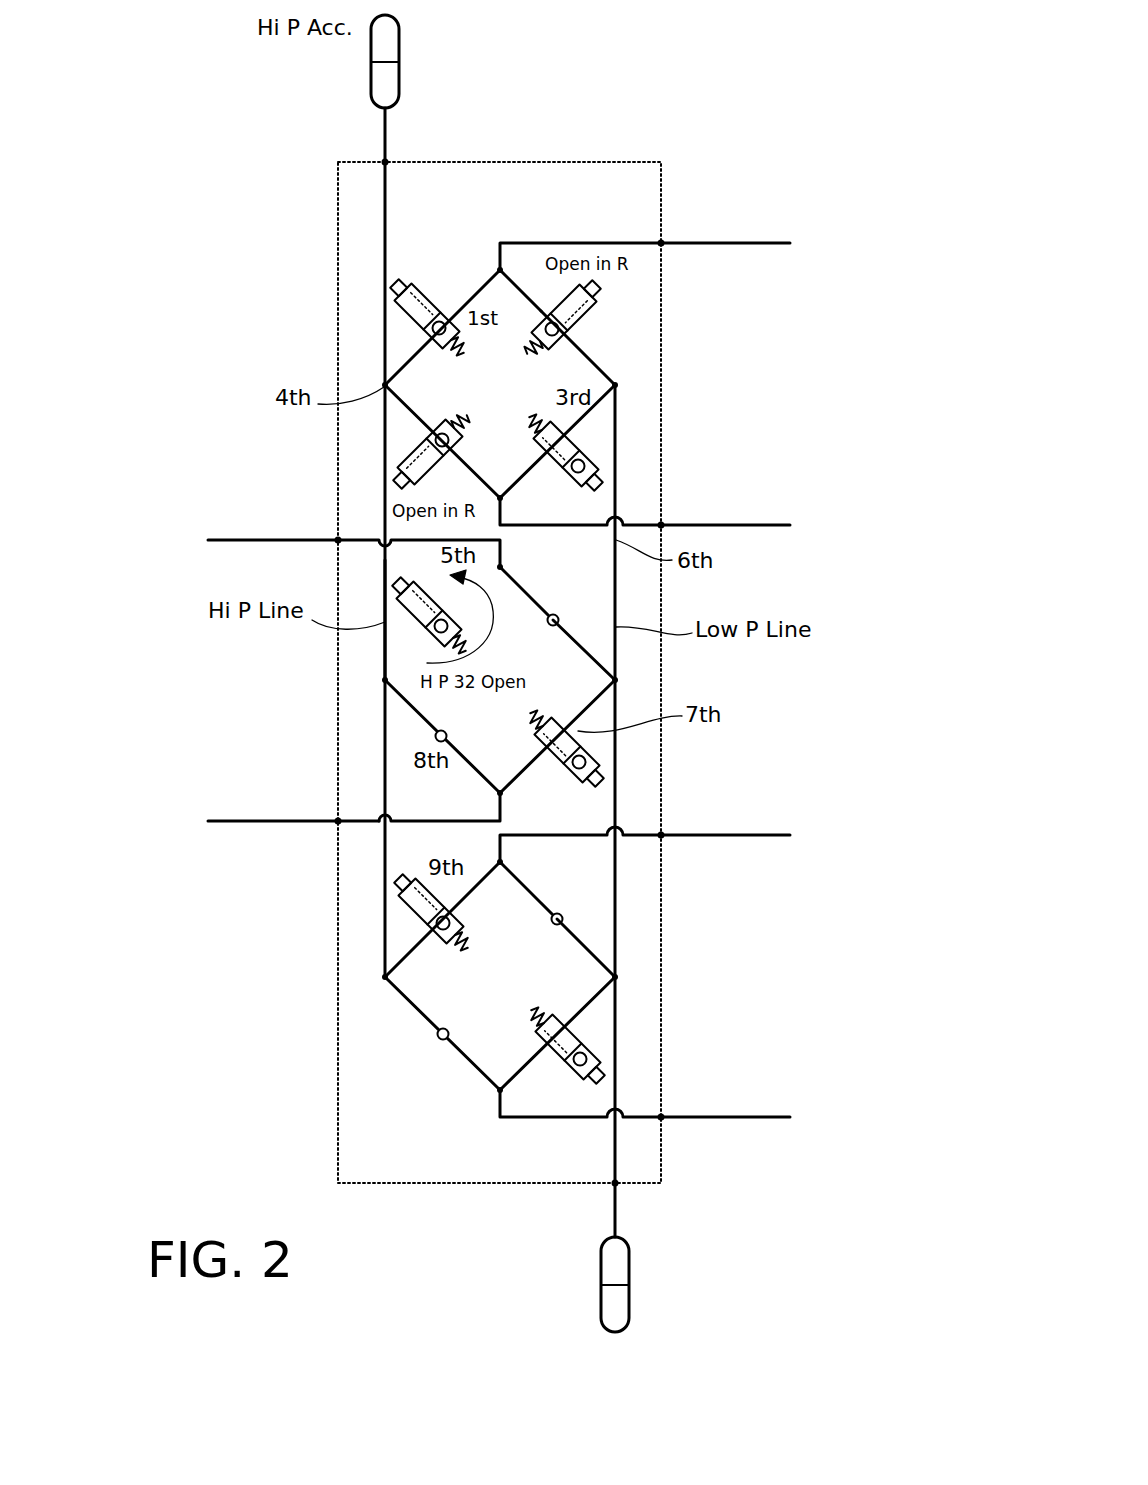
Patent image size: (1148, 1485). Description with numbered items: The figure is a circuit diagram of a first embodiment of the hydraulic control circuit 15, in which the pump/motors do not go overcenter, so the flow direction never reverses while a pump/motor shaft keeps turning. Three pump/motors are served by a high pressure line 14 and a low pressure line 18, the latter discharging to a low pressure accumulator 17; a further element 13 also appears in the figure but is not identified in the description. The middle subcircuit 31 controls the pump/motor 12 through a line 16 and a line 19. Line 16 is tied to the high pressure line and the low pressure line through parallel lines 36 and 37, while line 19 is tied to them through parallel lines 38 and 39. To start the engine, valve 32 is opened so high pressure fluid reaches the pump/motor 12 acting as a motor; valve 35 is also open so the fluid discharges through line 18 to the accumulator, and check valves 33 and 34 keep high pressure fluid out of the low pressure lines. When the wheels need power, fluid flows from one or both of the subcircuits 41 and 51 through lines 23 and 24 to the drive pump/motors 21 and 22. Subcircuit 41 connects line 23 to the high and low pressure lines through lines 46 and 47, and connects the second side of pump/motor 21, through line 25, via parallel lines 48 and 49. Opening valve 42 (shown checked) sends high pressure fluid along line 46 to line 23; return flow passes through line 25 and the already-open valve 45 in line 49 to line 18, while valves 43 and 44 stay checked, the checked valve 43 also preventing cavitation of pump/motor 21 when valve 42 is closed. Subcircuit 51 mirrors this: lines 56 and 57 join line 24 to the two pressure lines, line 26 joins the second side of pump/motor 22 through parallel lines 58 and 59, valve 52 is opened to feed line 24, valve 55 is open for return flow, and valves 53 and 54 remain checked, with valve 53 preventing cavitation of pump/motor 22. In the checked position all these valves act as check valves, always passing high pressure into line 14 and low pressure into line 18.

The pump/motor 12 is at (195, 821).
The high pressure accumulator 13 is at (398, 72).
The high pressure line 14 is at (386, 142).
The hydraulic control circuit 15 is at (498, 163).
The line 16 is at (230, 540).
The low pressure accumulator 17 is at (632, 1296).
The low pressure line 18 is at (617, 1200).
The line 19 is at (230, 821).
The drive pump/motor 21 is at (890, 525).
The drive pump/motor 22 is at (890, 1117).
The line 23 is at (720, 242).
The line 24 is at (720, 835).
The line 25 is at (720, 525).
The line 26 is at (722, 1115).
The middle subcircuit 31 is at (515, 578).
The valve 32 is at (436, 586).
The check valve 33 is at (555, 614).
The check valve 34 is at (450, 735).
The valve 35 is at (562, 722).
The parallel line 36 is at (385, 652).
The parallel line 37 is at (582, 656).
The parallel line 38 is at (410, 718).
The parallel line 39 is at (515, 785).
The subcircuit 41 is at (513, 278).
The valve 42 is at (408, 286).
The valve 43 is at (589, 333).
The valve 44 is at (436, 424).
The valve 45 is at (546, 420).
The line 46 is at (408, 363).
The line 47 is at (588, 364).
The parallel line 48 is at (470, 472).
The parallel line 49 is at (513, 486).
The subcircuit 51 is at (527, 888).
The valve 52 is at (467, 921).
The valve 53 is at (566, 914).
The valve 54 is at (455, 1032).
The valve 55 is at (563, 1017).
The line 56 is at (413, 950).
The line 57 is at (585, 950).
The parallel line 58 is at (415, 1010).
The parallel line 59 is at (517, 1080).